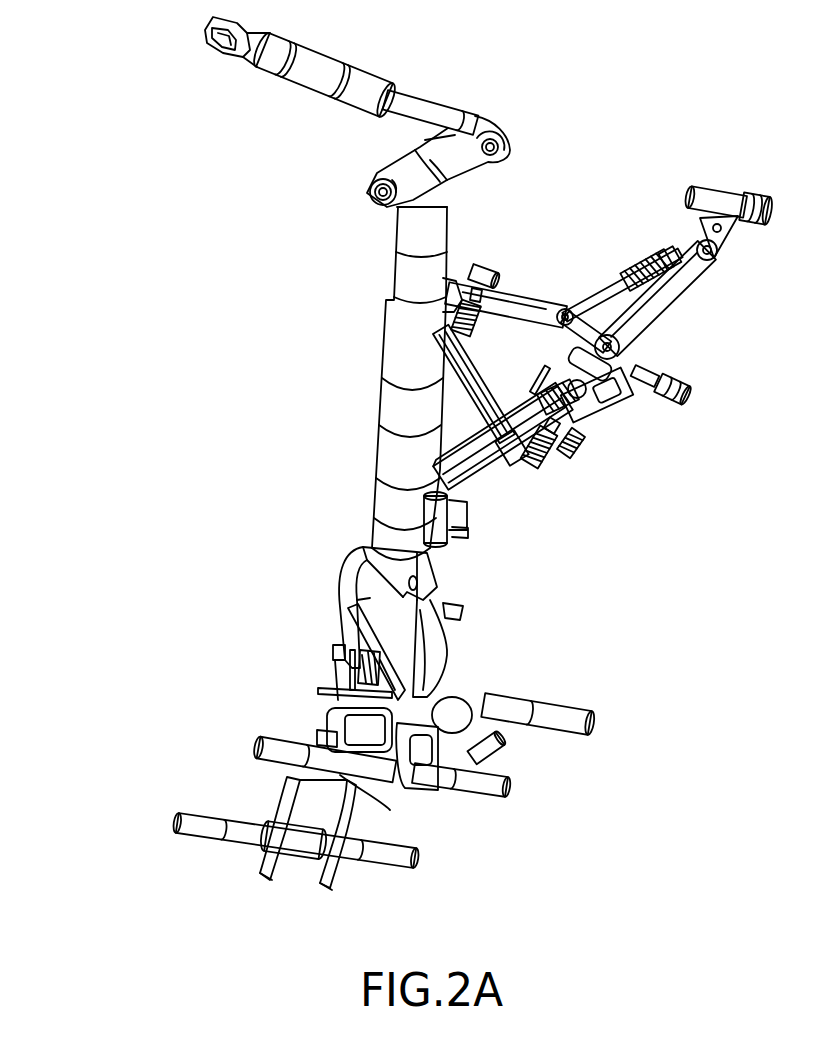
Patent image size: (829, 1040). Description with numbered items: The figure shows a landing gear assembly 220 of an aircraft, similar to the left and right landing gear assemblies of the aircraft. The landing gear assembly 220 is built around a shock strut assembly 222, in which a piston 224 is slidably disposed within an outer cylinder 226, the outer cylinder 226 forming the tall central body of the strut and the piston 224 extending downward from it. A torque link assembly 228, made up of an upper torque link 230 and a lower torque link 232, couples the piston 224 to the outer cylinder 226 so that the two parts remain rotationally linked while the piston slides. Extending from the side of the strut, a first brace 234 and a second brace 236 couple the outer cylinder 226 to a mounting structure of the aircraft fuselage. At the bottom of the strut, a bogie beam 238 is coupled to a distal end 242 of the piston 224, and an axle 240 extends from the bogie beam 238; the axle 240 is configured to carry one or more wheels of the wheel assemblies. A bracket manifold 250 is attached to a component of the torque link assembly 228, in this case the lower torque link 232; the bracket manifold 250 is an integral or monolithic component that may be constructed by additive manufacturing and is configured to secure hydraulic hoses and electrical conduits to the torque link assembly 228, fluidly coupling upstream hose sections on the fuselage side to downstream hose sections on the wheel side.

The landing gear assembly 220 is at (177, 193).
The shock strut assembly 222 is at (493, 547).
The piston 224 is at (397, 640).
The outer cylinder 226 is at (407, 452).
The torque link assembly 228 is at (303, 648).
The upper torque link 230 is at (347, 617).
The lower torque link 232 is at (333, 720).
The first brace 234 is at (680, 280).
The second brace 236 is at (597, 403).
The bogie beam 238 is at (437, 730).
The axle 240 is at (480, 787).
The distal end 242 is at (403, 693).
The bracket manifold 250 is at (302, 687).